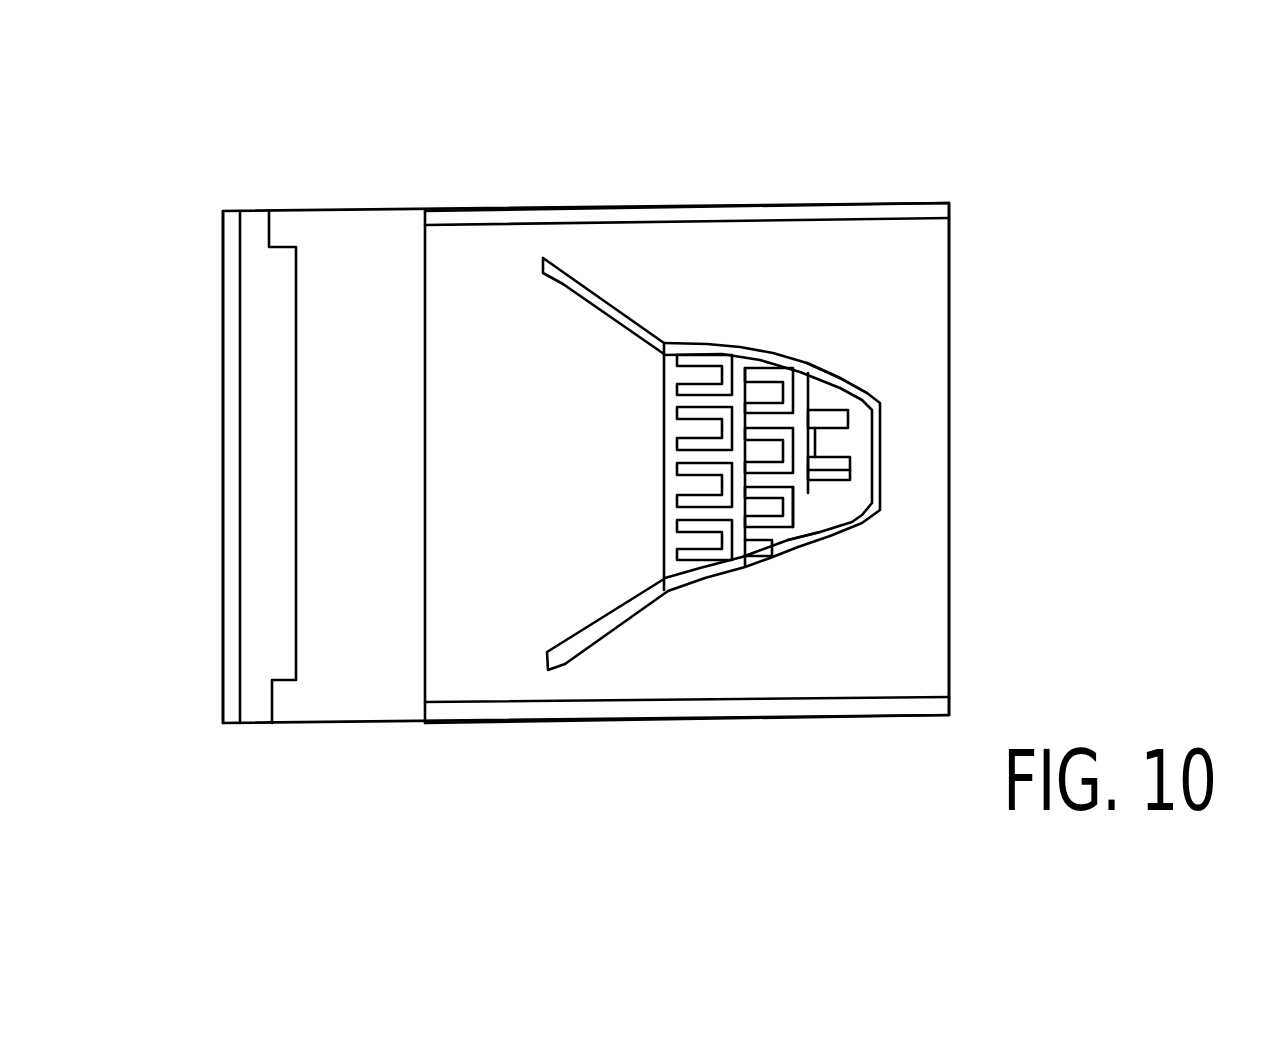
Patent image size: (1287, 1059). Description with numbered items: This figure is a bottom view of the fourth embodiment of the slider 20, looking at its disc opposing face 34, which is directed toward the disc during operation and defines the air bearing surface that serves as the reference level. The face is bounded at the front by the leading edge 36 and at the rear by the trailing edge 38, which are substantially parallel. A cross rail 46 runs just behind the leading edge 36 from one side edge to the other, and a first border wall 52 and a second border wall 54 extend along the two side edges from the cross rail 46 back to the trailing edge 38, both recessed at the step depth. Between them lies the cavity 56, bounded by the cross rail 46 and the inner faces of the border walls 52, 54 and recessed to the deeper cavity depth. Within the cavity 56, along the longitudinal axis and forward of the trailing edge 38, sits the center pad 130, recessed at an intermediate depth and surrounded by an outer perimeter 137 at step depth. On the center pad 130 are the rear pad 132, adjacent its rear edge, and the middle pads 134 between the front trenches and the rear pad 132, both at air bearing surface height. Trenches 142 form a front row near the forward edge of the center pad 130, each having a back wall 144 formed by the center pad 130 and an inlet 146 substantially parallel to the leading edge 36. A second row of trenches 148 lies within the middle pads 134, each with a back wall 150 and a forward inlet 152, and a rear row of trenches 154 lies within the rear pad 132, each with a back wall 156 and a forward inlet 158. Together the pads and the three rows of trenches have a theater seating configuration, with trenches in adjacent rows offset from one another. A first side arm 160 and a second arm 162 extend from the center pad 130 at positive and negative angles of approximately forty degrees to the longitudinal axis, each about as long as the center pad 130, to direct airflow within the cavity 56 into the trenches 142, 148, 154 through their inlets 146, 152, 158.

The slider 20 is at (328, 130).
The disc opposing face 34 is at (373, 662).
The leading edge 36 is at (223, 450).
The trailing edge 38 is at (949, 421).
The cross rail 46 is at (240, 723).
The first border wall 52 is at (657, 207).
The second border wall 54 is at (695, 712).
The cavity 56 is at (492, 675).
The center pad 130 is at (743, 565).
The rear pad 132 is at (807, 545).
The middle pads 134 is at (836, 373).
The outer perimeter 137 is at (872, 357).
The trenches 142 is at (702, 377).
The back wall 144 is at (768, 367).
The inlet 146 is at (675, 375).
The trenches 148 is at (768, 506).
The back wall 150 is at (790, 503).
The inlet 152 is at (748, 512).
The trenches 154 is at (836, 413).
The back wall 156 is at (850, 421).
The inlet 158 is at (810, 420).
The first side arm 160 is at (572, 280).
The second arm 162 is at (578, 642).